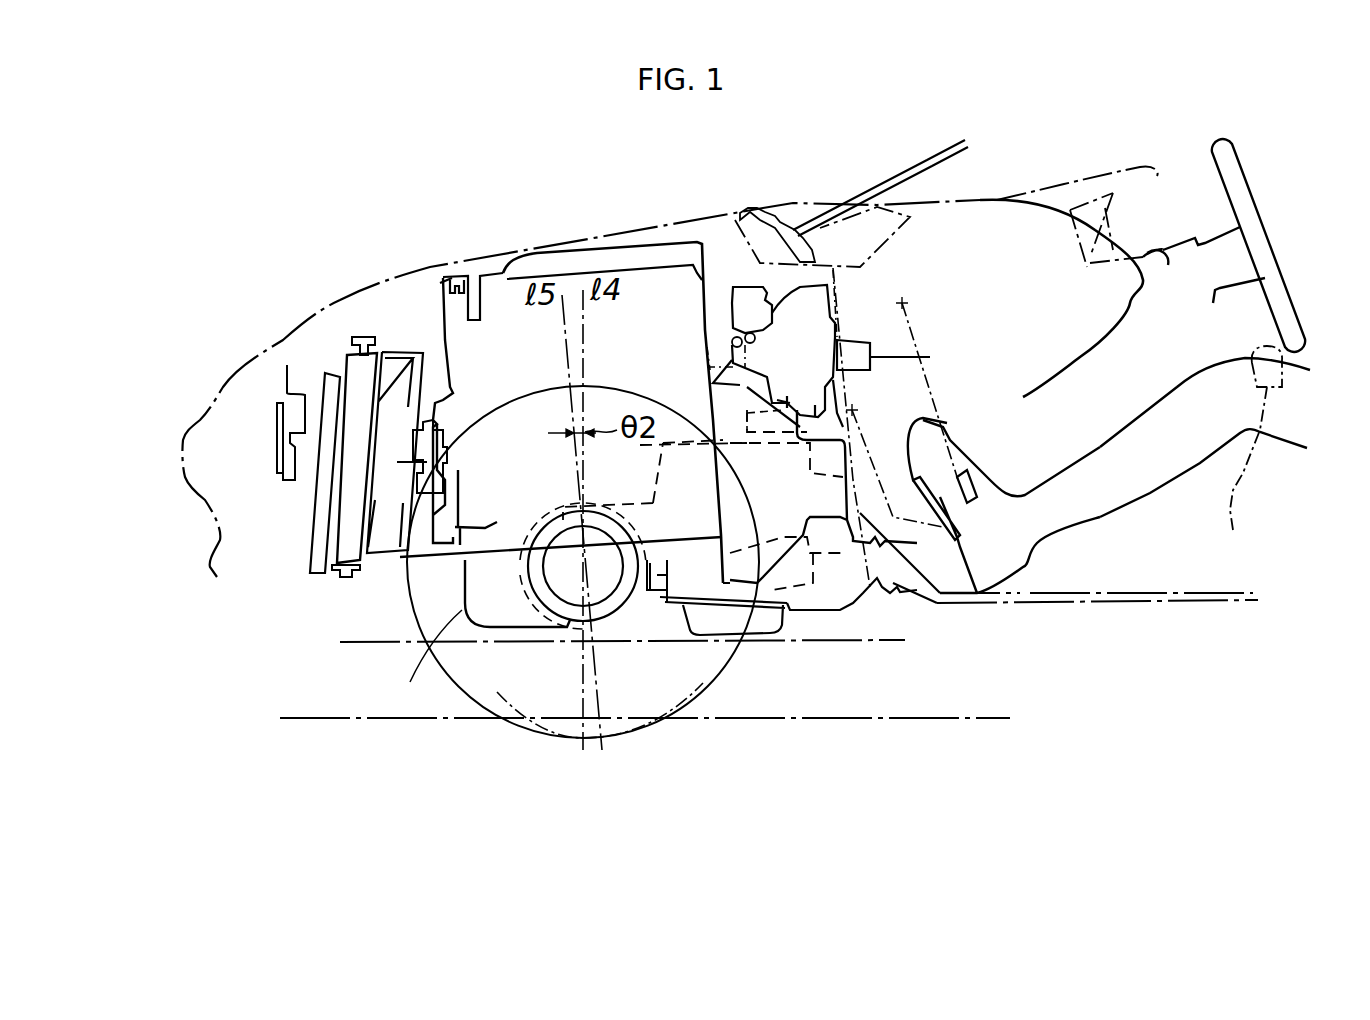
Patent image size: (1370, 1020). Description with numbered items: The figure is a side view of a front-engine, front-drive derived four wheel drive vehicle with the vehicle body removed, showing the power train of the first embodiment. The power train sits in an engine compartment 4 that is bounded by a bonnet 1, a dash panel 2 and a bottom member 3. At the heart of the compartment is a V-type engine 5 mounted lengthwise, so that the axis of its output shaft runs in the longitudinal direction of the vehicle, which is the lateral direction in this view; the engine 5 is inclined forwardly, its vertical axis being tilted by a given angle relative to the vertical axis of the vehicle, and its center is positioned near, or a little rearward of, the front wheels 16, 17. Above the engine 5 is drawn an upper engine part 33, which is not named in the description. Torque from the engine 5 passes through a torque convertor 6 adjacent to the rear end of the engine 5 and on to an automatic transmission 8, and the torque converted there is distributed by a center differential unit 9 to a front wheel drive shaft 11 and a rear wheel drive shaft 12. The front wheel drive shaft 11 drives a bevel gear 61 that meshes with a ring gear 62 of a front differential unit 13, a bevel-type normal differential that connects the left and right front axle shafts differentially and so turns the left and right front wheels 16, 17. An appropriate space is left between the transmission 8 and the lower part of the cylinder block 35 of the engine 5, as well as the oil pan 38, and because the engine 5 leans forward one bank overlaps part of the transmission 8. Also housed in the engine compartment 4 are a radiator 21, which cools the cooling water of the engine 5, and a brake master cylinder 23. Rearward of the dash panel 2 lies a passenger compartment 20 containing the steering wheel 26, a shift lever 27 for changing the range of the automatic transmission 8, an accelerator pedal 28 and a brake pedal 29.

The bonnet 1 is at (468, 242).
The dash panel 2 is at (838, 283).
The bottom member 3 is at (858, 642).
The engine compartment 4 is at (425, 312).
The engine 5 is at (440, 284).
The torque convertor 6 is at (750, 397).
The automatic transmission 8 is at (779, 623).
The center differential unit 9 is at (862, 603).
The front wheel drive shaft 11 is at (625, 600).
The rear wheel drive shaft 12 is at (923, 592).
The front differential unit 13 is at (533, 602).
The left front wheel 16 is at (620, 740).
The right front wheel 17 is at (583, 605).
The passenger compartment 20 is at (1125, 400).
The radiator 21 is at (337, 580).
The brake master cylinder 23 is at (835, 313).
The steering wheel 26 is at (1258, 215).
The shift lever 27 is at (1267, 418).
The accelerator pedal 28 is at (917, 410).
The brake pedal 29 is at (972, 487).
The engine cover 33 is at (628, 248).
The cylinder block 35 is at (497, 523).
The oil pan 38 is at (421, 658).
The bevel gear 61 is at (627, 610).
The ring gear 62 is at (568, 600).